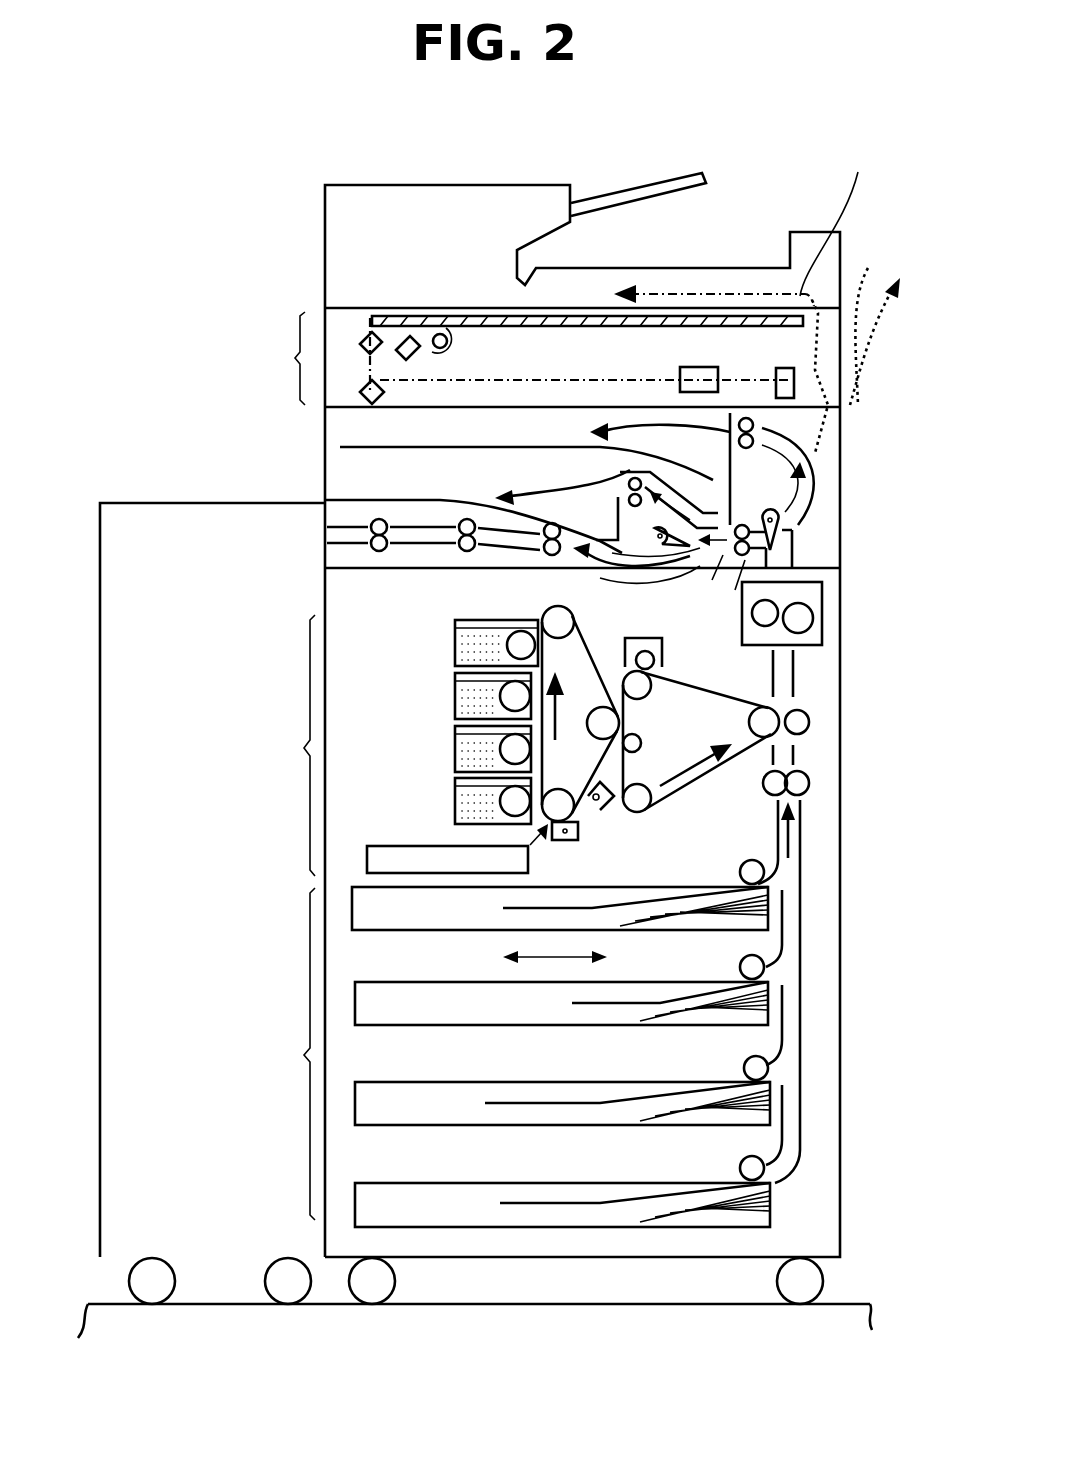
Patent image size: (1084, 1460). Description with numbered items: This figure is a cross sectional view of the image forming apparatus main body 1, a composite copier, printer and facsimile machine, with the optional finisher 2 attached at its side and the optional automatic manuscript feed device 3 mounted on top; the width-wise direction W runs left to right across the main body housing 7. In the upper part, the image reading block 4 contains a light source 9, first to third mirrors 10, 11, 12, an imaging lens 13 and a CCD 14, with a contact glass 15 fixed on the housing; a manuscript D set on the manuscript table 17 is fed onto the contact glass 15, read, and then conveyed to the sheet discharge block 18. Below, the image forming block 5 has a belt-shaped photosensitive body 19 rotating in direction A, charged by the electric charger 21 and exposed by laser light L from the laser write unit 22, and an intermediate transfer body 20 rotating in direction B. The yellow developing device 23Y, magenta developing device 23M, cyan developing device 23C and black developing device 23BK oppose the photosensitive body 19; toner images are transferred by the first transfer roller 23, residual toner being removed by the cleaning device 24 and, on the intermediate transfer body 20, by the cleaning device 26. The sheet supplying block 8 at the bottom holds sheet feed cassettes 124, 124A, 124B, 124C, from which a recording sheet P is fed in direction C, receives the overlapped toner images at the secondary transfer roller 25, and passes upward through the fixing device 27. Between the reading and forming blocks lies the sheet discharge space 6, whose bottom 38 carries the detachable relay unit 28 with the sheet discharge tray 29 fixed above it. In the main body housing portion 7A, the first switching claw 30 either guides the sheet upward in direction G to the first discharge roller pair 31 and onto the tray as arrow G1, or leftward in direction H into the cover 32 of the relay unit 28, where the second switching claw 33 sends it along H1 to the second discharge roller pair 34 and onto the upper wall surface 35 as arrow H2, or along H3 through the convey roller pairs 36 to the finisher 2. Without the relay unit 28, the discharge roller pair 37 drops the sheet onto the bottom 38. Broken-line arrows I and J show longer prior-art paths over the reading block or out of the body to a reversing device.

The image forming apparatus main body 1 is at (318, 437).
The finisher 2 is at (178, 482).
The automatic manuscript feed device 3 is at (302, 252).
The image reading block 4 is at (292, 358).
The image forming block 5 is at (297, 745).
The sheet discharge space 6 is at (524, 486).
The main body housing 7 is at (840, 772).
The main body housing portion 7A is at (840, 488).
The sheet supplying block 8 is at (296, 1054).
The light source 9 is at (455, 338).
The first mirror 10 is at (410, 342).
The second mirror 11 is at (372, 340).
The third mirror 12 is at (366, 400).
The imaging lens 13 is at (705, 367).
The CCD 14 is at (770, 368).
The contact glass 15 is at (555, 330).
The manuscript table 17 is at (640, 196).
The sheet discharge block 18 is at (738, 268).
The photosensitive body 19 is at (582, 655).
The intermediate transfer body 20 is at (680, 680).
The electric charger 21 is at (578, 842).
The laser write unit 22 is at (415, 846).
The first transfer roller 23 is at (642, 742).
The yellow developing device 23Y is at (455, 648).
The magenta developing device 23M is at (455, 702).
The cyan developing device 23C is at (455, 755).
The black developing device 23BK is at (455, 808).
The cleaning device 24 is at (600, 810).
The secondary transfer roller 25 is at (810, 720).
The cleaning device 26 is at (665, 638).
The fixing device 27 is at (822, 615).
The relay unit 28 is at (395, 498).
The sheet discharge tray 29 is at (383, 440).
The first switching claw 30 is at (790, 535).
The first discharge roller pair 31 is at (758, 425).
The cover 32 is at (512, 508).
The second switching claw 33 is at (668, 560).
The second discharge roller pair 34 is at (625, 505).
The upper wall surface 35 is at (432, 498).
The convey roller pairs 36 is at (380, 552).
The discharge roller pair 37 is at (792, 560).
The bottom of the sheet discharge space 38 is at (327, 548).
The sheet feed cassette 124 is at (392, 930).
The sheet feed cassette 124A is at (395, 1025).
The sheet feed cassette 124B is at (395, 1125).
The sheet feed cassette 124C is at (488, 1227).
The rotation direction of photosensitive body A is at (565, 706).
The rotation direction of intermediate transfer body B is at (698, 757).
The sheet feed direction C is at (800, 824).
The manuscript D is at (572, 300).
The upward conveyance direction G is at (795, 490).
The discharge direction to discharge tray G1 is at (637, 431).
The leftward conveyance direction H is at (721, 586).
The conveyance direction inside cover H1 is at (678, 490).
The discharge direction onto upper wall surface H2 is at (540, 488).
The conveyance direction to finisher H3 is at (590, 575).
The known conveyance path over image reading block I is at (830, 299).
The known discharge path to reversing device J is at (875, 311).
The laser light L is at (540, 848).
The recording sheet P is at (680, 905).
The width-wise direction W is at (555, 971).